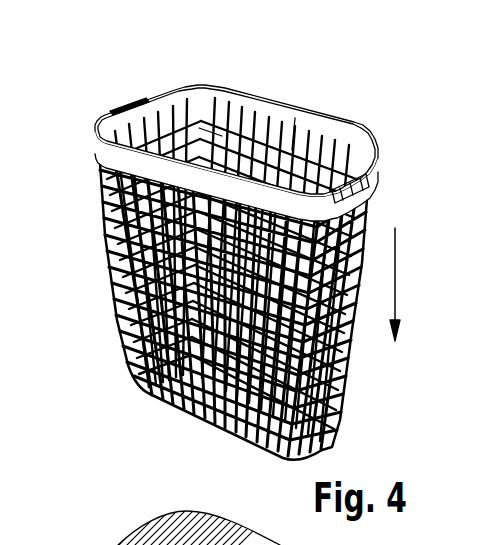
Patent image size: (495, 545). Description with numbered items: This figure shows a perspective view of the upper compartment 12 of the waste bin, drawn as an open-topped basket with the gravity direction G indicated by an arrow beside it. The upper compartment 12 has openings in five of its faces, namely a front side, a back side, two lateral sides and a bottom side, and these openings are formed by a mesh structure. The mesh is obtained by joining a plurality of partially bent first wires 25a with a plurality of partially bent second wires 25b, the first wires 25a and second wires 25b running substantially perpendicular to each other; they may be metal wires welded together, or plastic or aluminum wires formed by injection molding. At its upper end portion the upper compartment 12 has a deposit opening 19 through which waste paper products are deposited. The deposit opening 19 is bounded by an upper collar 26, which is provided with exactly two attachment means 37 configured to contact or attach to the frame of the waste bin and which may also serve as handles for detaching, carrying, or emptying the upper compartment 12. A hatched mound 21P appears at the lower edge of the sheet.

The deposit opening 19 is at (242, 236).
The upper compartment 12 is at (118, 333).
The upper collar 26 is at (371, 165).
The attachment means 37 is at (125, 108).
The first wires 25a is at (307, 153).
The second wires 25b is at (232, 147).
The gravity direction G is at (396, 258).
The laundry pile 21P is at (180, 522).